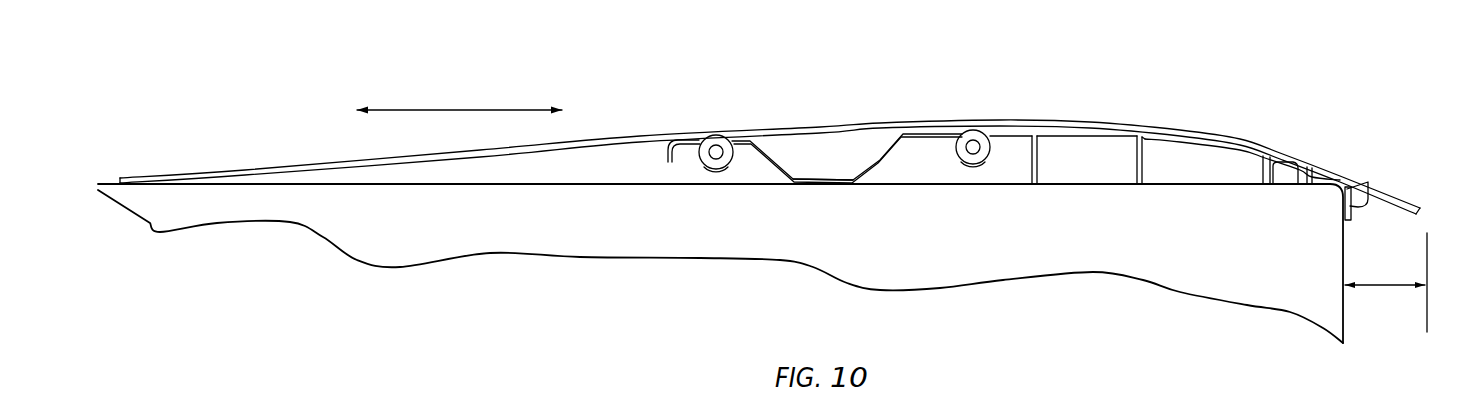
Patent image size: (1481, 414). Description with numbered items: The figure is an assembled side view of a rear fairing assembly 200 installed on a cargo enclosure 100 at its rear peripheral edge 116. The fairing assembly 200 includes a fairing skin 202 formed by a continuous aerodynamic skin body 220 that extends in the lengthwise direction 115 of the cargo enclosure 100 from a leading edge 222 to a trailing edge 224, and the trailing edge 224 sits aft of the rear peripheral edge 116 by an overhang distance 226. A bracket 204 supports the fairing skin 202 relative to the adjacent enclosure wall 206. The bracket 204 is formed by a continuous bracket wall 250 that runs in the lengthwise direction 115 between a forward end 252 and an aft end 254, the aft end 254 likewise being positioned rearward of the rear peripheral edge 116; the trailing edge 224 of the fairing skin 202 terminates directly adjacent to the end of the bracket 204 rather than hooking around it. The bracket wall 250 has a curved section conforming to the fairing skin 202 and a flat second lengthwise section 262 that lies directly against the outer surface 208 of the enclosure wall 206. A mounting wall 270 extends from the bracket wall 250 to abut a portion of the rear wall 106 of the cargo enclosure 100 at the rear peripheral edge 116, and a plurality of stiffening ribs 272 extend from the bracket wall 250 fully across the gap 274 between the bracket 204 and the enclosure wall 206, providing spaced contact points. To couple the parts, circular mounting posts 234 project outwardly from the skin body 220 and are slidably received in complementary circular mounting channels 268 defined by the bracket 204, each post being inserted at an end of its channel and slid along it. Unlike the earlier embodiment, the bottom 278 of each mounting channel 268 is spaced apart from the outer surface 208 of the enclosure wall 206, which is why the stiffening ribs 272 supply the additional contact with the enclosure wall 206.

The cargo enclosure 100 is at (575, 238).
The rear wall 106 is at (1345, 323).
The lengthwise direction 115 is at (473, 110).
The rear peripheral edge 116 is at (1330, 187).
The fairing assembly 200 is at (1330, 72).
The fairing skin 202 is at (770, 142).
The bracket 204 is at (1036, 196).
The enclosure wall 206 is at (555, 190).
The outer surface 208 is at (462, 176).
The skin body 220 is at (1090, 115).
The leading edge 222 is at (120, 183).
The trailing edge 224 is at (1425, 212).
The overhang distance 226 is at (1377, 282).
The mounting posts 234 is at (710, 138).
The bracket wall 250 is at (763, 170).
The forward end 252 is at (669, 162).
The aft end 254 is at (1420, 213).
The second lengthwise section 262 is at (818, 188).
The mounting channels 268 is at (700, 172).
The mounting wall 270 is at (1372, 182).
The stiffening ribs 272 is at (1036, 174).
The gap 274 is at (937, 173).
The bottom 278 is at (727, 170).